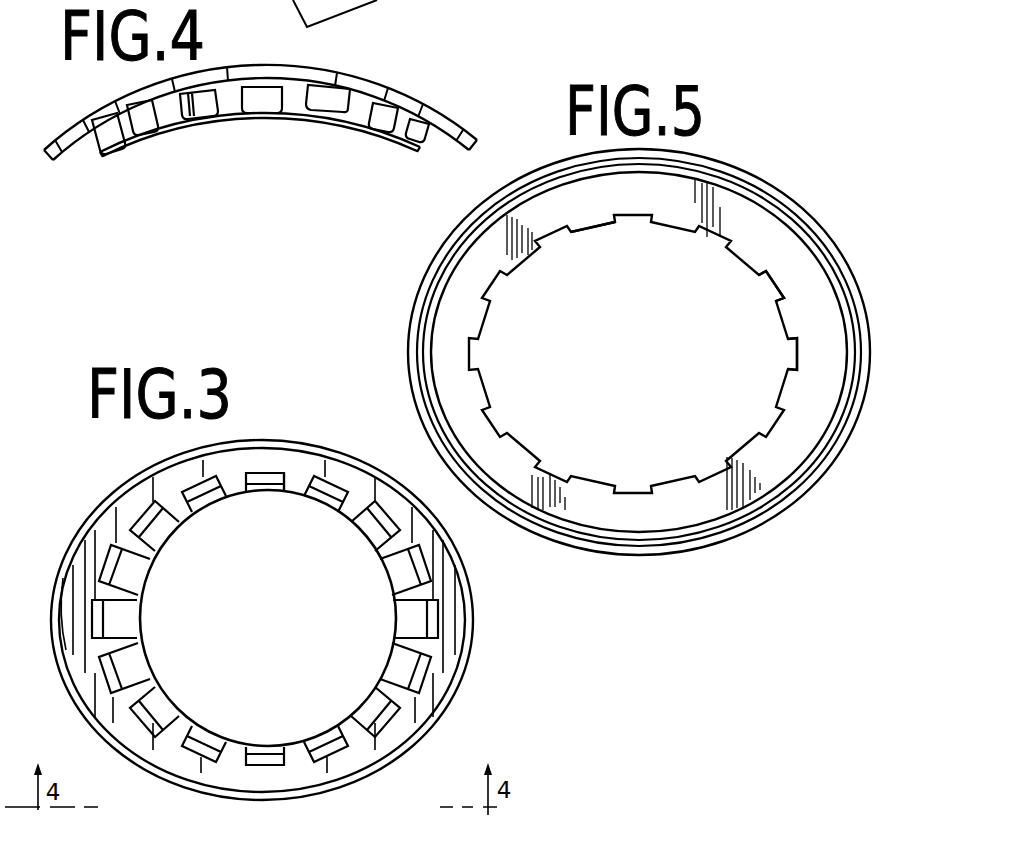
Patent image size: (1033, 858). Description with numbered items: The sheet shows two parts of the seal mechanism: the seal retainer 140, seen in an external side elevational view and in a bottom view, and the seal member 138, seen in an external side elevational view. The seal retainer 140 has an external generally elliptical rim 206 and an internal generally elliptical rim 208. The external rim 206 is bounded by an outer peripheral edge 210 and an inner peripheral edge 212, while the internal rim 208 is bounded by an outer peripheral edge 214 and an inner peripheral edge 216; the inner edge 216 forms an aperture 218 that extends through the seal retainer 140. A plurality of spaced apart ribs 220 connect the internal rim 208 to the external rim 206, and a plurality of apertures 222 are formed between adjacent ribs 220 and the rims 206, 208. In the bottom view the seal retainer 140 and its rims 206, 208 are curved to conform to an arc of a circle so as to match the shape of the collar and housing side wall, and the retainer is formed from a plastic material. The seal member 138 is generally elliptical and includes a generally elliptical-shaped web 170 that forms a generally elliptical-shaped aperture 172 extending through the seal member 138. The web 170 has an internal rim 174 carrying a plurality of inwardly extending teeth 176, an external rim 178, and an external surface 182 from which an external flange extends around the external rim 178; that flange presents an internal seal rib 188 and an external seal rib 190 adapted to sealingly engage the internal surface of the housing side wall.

In FIG. 5, the seal member 138 is at (772, 172).
In FIG. 4, the seal retainer 140 is at (400, 74).
In FIG. 3, the seal retainer 140 is at (300, 432).
In FIG. 5, the web 170 is at (603, 207).
In FIG. 5, the aperture 172 is at (640, 408).
In FIG. 5, the internal rim 174 is at (795, 325).
In FIG. 5, the teeth 176 is at (775, 303).
In FIG. 5, the external rim 178 is at (818, 233).
In FIG. 5, the external surface 182 is at (542, 223).
In FIG. 5, the internal seal rib 188 is at (836, 401).
In FIG. 5, the external seal rib 190 is at (857, 342).
In FIG. 4, the external rim 206 is at (455, 118).
In FIG. 3, the external rim 206 is at (453, 613).
In FIG. 4, the internal rim 208 is at (365, 133).
In FIG. 3, the internal rim 208 is at (397, 568).
In FIG. 4, the outer peripheral edge 210 is at (478, 147).
In FIG. 3, the outer peripheral edge 210 is at (467, 670).
In FIG. 3, the inner peripheral edge 212 is at (413, 677).
In FIG. 4, the outer peripheral edge 214 is at (416, 152).
In FIG. 3, the outer peripheral edge 214 is at (383, 517).
In FIG. 3, the inner peripheral edge 216 is at (360, 540).
In FIG. 3, the aperture 218 is at (268, 625).
In FIG. 4, the ribs 220 is at (284, 98).
In FIG. 3, the ribs 220 is at (230, 488).
In FIG. 4, the apertures 222 is at (202, 103).
In FIG. 3, the apertures 222 is at (190, 500).